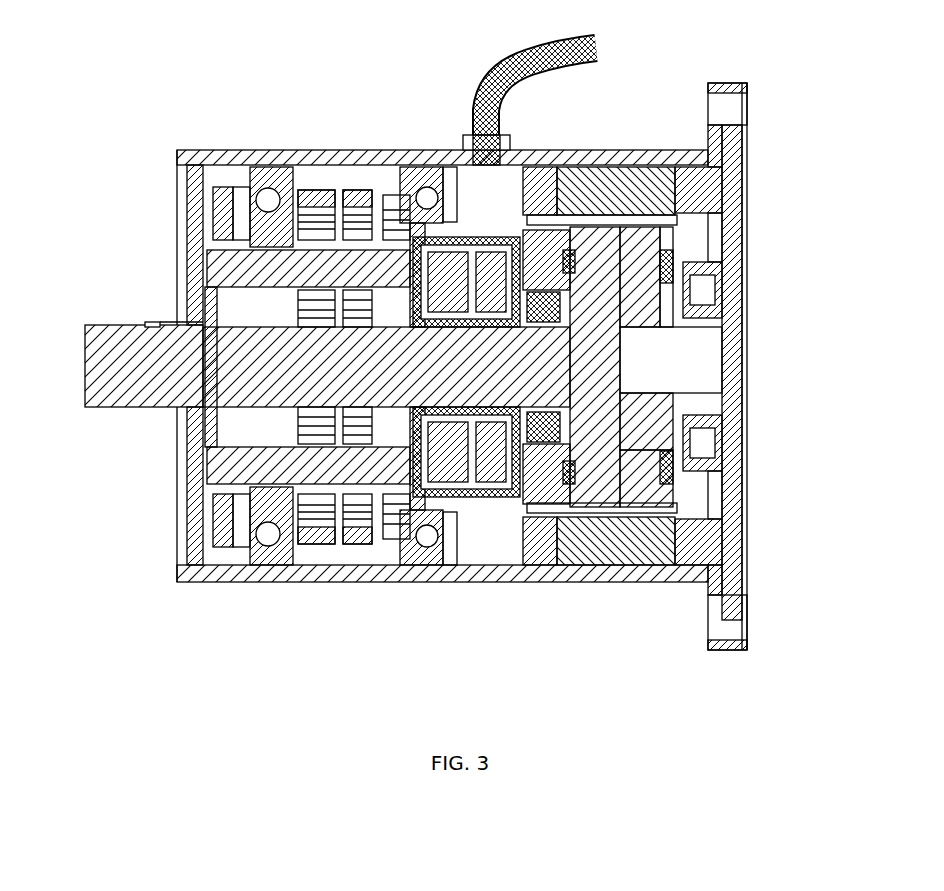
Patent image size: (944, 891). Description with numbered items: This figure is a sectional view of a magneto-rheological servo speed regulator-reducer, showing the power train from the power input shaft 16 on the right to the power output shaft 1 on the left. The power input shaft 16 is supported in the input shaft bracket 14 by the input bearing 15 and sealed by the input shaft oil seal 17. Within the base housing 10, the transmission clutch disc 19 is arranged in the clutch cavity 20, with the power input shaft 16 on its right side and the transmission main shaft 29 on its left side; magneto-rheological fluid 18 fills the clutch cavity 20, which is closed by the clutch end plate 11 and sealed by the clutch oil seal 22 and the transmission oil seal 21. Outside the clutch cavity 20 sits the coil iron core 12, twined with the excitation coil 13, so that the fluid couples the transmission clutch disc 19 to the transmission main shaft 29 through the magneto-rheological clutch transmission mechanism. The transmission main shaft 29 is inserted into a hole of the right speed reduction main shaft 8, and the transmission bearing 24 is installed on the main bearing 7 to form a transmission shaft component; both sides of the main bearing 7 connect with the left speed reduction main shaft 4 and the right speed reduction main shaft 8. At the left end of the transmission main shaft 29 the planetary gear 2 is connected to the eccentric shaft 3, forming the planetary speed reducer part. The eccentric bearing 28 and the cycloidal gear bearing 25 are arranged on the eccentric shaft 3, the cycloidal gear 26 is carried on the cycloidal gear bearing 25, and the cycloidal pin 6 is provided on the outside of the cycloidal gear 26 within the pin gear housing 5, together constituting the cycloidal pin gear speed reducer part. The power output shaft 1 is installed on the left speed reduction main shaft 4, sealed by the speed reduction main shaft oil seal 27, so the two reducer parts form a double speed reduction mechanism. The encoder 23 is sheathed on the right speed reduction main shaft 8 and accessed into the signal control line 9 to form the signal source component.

The power output shaft 1 is at (122, 353).
The planetary gear 2 is at (223, 313).
The eccentric shaft 3 is at (207, 250).
The left speed reduction main shaft 4 is at (227, 168).
The pin gear housing 5 is at (277, 168).
The cycloidal pin 6 is at (333, 168).
The main bearing 7 is at (405, 168).
The right speed reduction main shaft 8 is at (440, 153).
The signal control line 9 is at (493, 70).
The base housing 10 is at (537, 153).
The clutch end plate 11 is at (563, 237).
The coil iron core 12 is at (653, 173).
The excitation coil 13 is at (745, 115).
The input shaft bracket 14 is at (730, 237).
The input bearing 15 is at (718, 292).
The power input shaft 16 is at (707, 365).
The input shaft oil seal 17 is at (675, 415).
The magneto-rheological fluid 18 is at (720, 470).
The transmission clutch disc 19 is at (660, 482).
The clutch cavity 20 is at (740, 595).
The transmission oil seal 21 is at (630, 577).
The clutch oil seal 22 is at (580, 575).
The encoder 23 is at (540, 514).
The transmission bearing 24 is at (472, 492).
The cycloidal gear bearing 25 is at (320, 434).
The cycloidal gear 26 is at (352, 542).
The speed reduction main shaft oil seal 27 is at (418, 562).
The eccentric bearing 28 is at (200, 412).
The transmission main shaft 29 is at (210, 363).